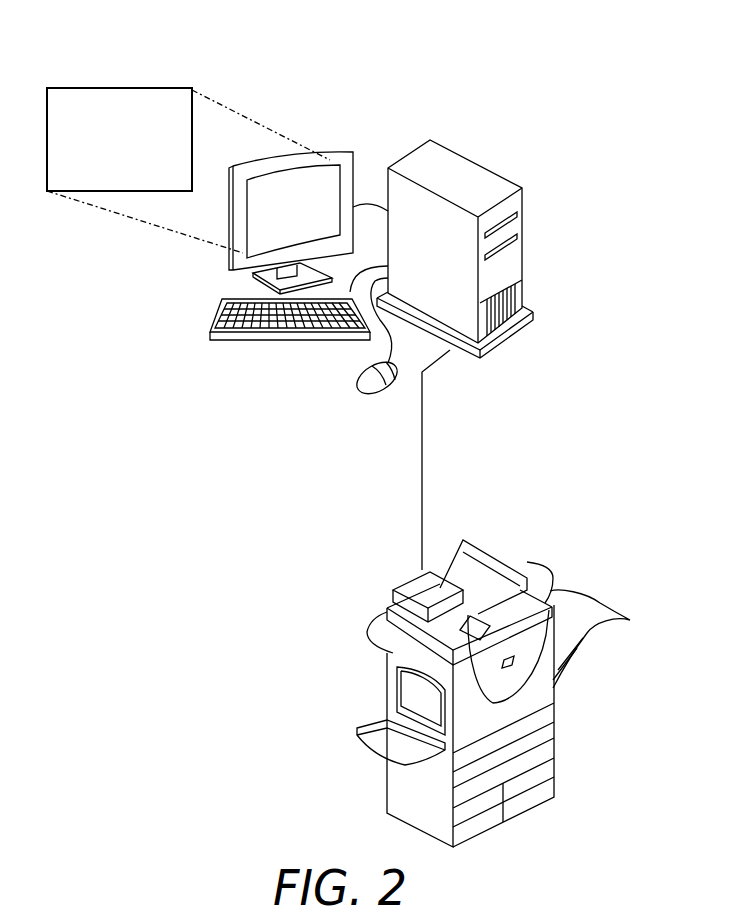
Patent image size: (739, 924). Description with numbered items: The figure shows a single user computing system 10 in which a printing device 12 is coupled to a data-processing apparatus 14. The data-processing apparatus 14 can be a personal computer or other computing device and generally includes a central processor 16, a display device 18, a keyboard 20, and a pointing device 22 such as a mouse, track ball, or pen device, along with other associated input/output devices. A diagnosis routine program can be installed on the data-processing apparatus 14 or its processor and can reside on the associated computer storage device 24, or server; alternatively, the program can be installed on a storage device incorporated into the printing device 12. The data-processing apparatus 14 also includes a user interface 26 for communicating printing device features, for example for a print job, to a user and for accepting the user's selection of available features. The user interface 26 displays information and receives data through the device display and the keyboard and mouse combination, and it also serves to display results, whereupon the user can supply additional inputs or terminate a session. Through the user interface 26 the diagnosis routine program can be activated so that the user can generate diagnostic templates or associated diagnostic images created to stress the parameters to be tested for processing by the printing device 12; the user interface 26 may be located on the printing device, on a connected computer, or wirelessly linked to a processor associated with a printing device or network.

The single user computing system 10 is at (431, 62).
The printing device 12 is at (486, 543).
The data-processing apparatus 14 is at (272, 157).
The central processor 16 is at (455, 352).
The display device 18 is at (322, 183).
The keyboard 20 is at (300, 315).
The pointing device 22 is at (368, 380).
The computer storage device 24 is at (473, 162).
The user interface 26 is at (120, 88).